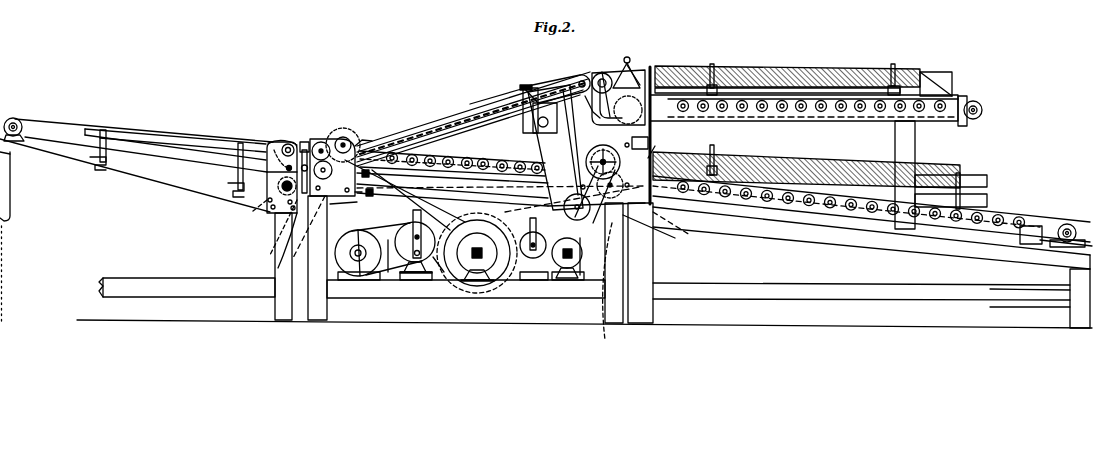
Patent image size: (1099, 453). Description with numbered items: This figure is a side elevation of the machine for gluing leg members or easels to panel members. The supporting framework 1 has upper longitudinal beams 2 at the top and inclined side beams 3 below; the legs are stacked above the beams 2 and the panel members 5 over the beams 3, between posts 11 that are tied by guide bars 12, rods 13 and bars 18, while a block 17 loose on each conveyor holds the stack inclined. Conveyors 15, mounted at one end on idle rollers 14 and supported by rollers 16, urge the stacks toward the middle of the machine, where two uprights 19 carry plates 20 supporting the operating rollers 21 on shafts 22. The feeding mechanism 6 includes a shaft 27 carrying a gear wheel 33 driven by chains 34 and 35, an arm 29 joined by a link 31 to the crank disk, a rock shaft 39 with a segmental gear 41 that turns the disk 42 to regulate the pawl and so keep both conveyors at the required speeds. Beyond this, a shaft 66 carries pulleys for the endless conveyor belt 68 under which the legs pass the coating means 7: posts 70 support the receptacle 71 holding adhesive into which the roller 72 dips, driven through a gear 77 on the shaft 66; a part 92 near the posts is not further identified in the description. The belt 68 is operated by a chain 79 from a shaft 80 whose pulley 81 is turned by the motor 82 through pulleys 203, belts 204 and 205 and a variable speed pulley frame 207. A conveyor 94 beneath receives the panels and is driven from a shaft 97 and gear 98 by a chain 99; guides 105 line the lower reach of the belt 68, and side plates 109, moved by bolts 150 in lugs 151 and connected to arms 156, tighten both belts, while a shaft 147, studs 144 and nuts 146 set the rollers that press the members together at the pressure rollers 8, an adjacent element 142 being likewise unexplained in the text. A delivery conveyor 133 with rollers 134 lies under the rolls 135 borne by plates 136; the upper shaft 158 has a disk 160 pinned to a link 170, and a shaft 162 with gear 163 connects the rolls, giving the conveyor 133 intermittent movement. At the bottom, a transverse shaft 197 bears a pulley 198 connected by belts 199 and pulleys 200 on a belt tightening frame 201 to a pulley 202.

The supporting framework 1 is at (716, 310).
The upper longitudinal beams 2 is at (960, 100).
The inclined side beams 3 is at (1050, 232).
The panel members 5 is at (945, 165).
The feeding mechanism 6 is at (618, 80).
The adhesive vessel and coating means 7 is at (555, 147).
The pressure rollers 8 is at (330, 57).
The posts 11 is at (893, 64).
The longitudinal guide bars 12 is at (935, 80).
The rods 13 is at (820, 66).
The idle rollers 14 is at (984, 109).
The conveyors 15 is at (1042, 228).
The rollers 16 is at (470, 158).
The block 17 is at (962, 96).
The bars 18 is at (962, 176).
The uprights 19 is at (642, 323).
The plates 20 is at (653, 70).
The operating rollers 21 is at (668, 230).
The shafts 22 is at (663, 231).
The shaft 27 is at (598, 74).
The arm 29 is at (605, 158).
The link 31 is at (589, 110).
The gear wheel 33 is at (592, 68).
The chain 34 is at (572, 208).
The chain 35 is at (593, 210).
The rock shaft 39 is at (630, 58).
The segmental gear 41 is at (640, 70).
The disk 42 is at (650, 120).
The shaft 66 is at (323, 149).
The endless conveyor belt 68 is at (422, 128).
The posts 70 is at (528, 95).
The receptacle 71 is at (533, 126).
The roller 72 is at (523, 116).
The gear 77 is at (572, 77).
The chain 79 is at (366, 142).
The shaft 80 is at (478, 286).
The pulley 81 is at (482, 194).
The motor 82 is at (352, 278).
The stop 92 is at (526, 85).
The conveyor 94 is at (501, 185).
The shaft 97 is at (572, 200).
The gear 98 is at (606, 300).
The chain 99 is at (486, 283).
The guides 105 is at (390, 145).
The plates 109 is at (338, 198).
The delivery conveyor 133 is at (60, 121).
The rollers 134 is at (26, 106).
The rolls 135 is at (268, 147).
The plates 136 is at (277, 140).
The gear 142 is at (343, 139).
The threaded studs 144 is at (306, 141).
The nuts 146 is at (304, 150).
The shaft 147 is at (275, 263).
The bolts 150 is at (370, 188).
The lugs 151 is at (370, 196).
The arms 156 is at (385, 175).
The shaft 158 is at (287, 166).
The disk 160 is at (288, 143).
The shaft 162 is at (268, 240).
The gear 163 is at (292, 220).
The link 170 is at (230, 178).
The transverse shaft 197 is at (578, 278).
The pulley 198 is at (563, 268).
The belts 199 is at (496, 272).
The pulleys 200 is at (477, 252).
The belt tightening frame 201 is at (528, 259).
The pulley 202 is at (470, 284).
The pulleys 203 is at (400, 262).
The belt 204 is at (418, 266).
The belt 205 is at (372, 272).
The variable speed pulley frame 207 is at (406, 272).